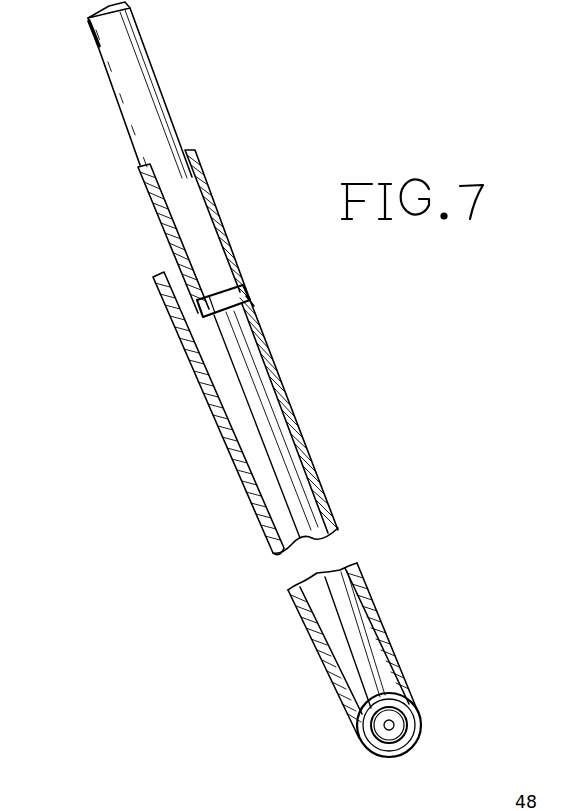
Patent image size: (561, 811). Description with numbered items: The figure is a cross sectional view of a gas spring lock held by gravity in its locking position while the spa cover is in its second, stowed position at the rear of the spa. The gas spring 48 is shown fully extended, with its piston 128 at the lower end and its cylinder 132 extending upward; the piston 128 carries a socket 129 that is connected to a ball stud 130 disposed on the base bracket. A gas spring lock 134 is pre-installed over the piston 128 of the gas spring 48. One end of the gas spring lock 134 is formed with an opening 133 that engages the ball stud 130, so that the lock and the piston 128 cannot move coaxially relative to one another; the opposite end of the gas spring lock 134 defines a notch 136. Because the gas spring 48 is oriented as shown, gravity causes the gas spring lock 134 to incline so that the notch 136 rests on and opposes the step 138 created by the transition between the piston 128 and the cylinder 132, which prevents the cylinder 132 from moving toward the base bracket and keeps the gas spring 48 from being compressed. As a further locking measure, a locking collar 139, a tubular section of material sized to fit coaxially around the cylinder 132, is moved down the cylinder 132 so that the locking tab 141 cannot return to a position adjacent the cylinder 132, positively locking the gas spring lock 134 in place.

The gas spring 48 is at (115, 252).
The cylinder 132 is at (165, 100).
The locking collar 139 is at (205, 175).
The step 138 is at (208, 314).
The notch 136 is at (256, 305).
The locking tab 141 is at (158, 297).
The gas spring lock 134 is at (230, 478).
The piston 128 is at (353, 630).
The socket 129 is at (394, 727).
The ball stud 130 is at (390, 722).
The opening 133 is at (361, 744).